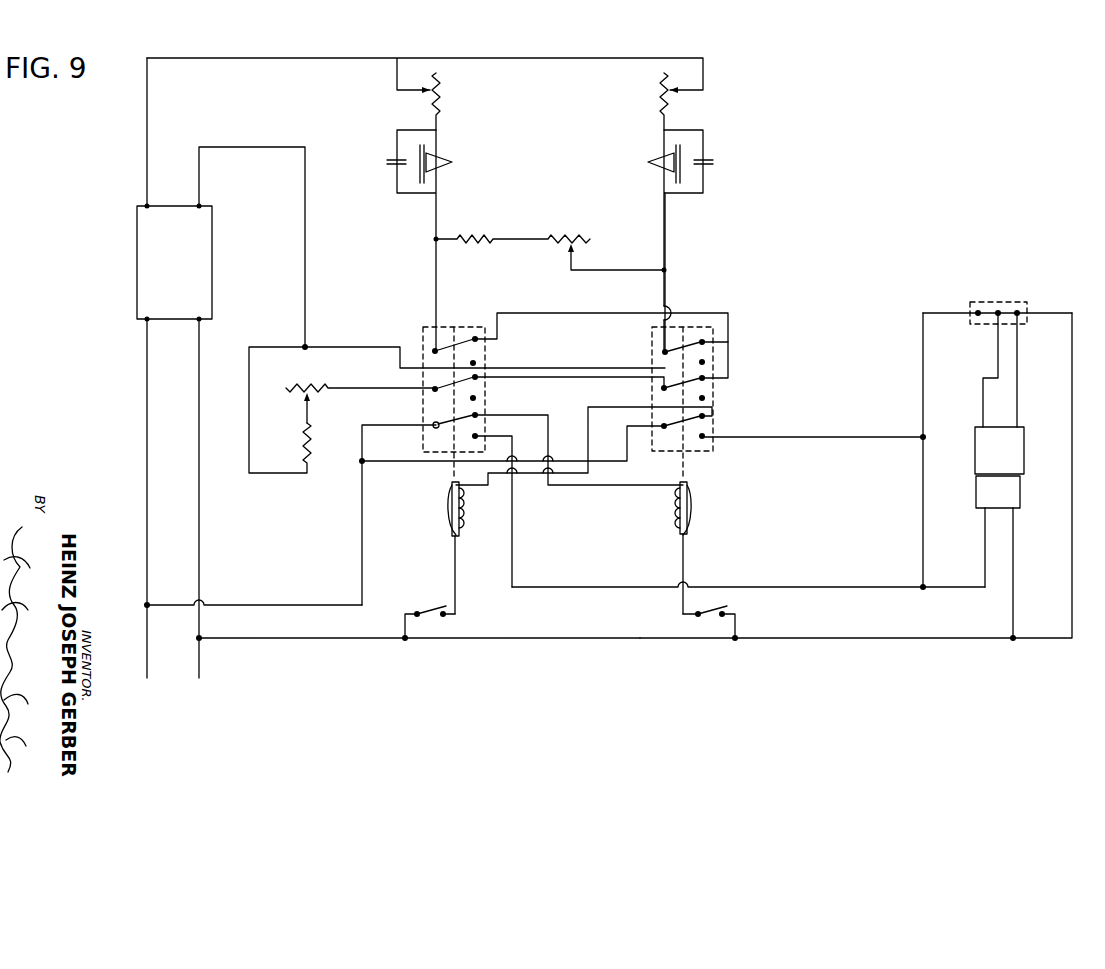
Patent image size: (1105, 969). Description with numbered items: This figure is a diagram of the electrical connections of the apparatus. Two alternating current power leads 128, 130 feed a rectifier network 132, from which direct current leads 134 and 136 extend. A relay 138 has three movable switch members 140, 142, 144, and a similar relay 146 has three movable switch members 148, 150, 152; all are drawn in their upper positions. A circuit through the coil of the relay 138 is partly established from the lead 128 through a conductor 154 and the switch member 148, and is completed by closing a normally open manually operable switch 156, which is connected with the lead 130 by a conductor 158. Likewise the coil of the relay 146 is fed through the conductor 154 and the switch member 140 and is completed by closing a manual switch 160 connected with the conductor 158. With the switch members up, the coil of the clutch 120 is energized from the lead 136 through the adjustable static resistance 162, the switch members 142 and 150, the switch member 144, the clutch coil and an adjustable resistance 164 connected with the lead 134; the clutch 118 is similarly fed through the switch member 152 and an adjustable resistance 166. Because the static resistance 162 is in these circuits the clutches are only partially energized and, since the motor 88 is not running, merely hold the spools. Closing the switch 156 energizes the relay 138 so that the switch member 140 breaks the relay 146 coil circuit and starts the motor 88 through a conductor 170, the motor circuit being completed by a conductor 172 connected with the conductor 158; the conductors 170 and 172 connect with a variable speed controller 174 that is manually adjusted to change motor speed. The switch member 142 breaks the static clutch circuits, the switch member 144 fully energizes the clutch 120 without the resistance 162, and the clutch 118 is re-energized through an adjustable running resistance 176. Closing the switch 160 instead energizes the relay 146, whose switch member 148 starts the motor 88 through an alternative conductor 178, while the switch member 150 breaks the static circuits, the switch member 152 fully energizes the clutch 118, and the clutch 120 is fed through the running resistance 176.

The motor 88 is at (1024, 452).
The clutch 118 is at (656, 157).
The clutch 120 is at (440, 158).
The alternating current power lead 128 is at (147, 488).
The alternating current power lead 130 is at (199, 535).
The rectifier network 132 is at (184, 260).
The direct current lead 134 is at (265, 58).
The direct current lead 136 is at (230, 147).
The relay 138 is at (449, 532).
The movable switch member 140 is at (441, 421).
The movable switch member 142 is at (468, 384).
The movable switch member 144 is at (446, 345).
The relay 146 is at (692, 522).
The movable switch member 148 is at (693, 420).
The movable switch member 150 is at (690, 382).
The movable switch member 152 is at (663, 340).
The conductor 154 is at (253, 605).
The manually operable switch 156 is at (438, 608).
The conductor 158 is at (265, 638).
The manually operable switch 160 is at (714, 610).
The adjustable static resistance 162 is at (284, 389).
The adjustable trim resistance 164 is at (438, 78).
The adjustable trim resistance 166 is at (657, 82).
The conductor 170 is at (848, 587).
The conductor 172 is at (852, 638).
The variable speed controller 174 is at (1012, 302).
The adjustable running resistance 176 is at (561, 250).
The conductor 178 is at (848, 437).